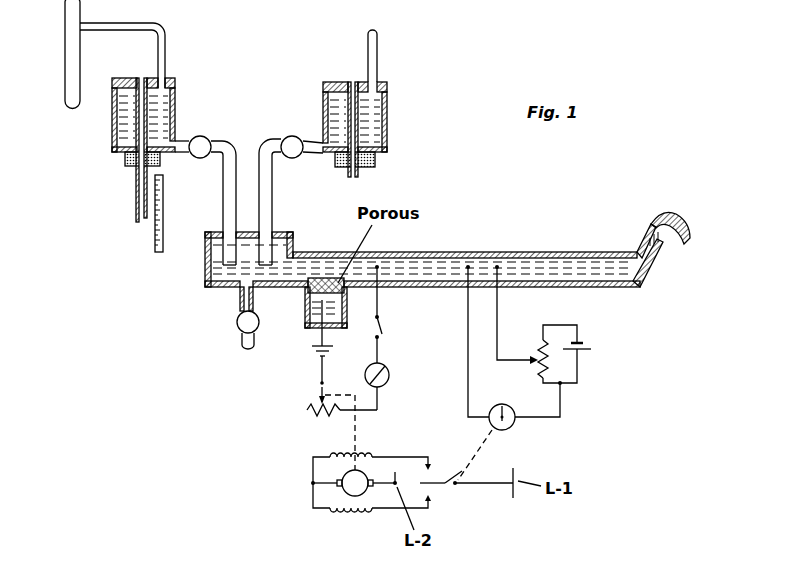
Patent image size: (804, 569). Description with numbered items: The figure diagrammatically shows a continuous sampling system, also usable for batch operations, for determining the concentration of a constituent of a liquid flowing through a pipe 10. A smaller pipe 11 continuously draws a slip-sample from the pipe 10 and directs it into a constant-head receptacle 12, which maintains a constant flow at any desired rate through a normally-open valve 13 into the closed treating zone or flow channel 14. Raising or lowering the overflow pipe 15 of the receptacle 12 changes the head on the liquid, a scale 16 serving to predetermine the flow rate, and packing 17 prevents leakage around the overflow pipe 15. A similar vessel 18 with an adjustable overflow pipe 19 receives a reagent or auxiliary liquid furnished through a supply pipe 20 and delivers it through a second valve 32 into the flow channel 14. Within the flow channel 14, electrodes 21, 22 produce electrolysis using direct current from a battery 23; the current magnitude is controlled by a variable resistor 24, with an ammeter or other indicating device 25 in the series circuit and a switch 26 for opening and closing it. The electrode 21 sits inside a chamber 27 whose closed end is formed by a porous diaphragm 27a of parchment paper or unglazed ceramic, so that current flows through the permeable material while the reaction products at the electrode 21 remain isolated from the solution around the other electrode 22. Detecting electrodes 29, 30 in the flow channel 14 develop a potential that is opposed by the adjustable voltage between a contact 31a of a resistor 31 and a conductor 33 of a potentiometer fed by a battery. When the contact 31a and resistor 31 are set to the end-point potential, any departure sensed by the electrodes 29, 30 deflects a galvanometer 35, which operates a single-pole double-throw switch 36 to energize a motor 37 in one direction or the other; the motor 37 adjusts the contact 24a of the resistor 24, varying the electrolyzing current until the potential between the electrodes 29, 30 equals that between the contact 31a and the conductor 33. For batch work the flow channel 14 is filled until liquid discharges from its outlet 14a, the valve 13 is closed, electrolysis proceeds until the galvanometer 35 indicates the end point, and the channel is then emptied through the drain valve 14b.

The pipe 10 is at (68, 57).
The smaller pipe 11 is at (167, 50).
The constant-head receptacle 12 is at (174, 100).
The normally-open valve 13 is at (208, 136).
The closed treating zone or flow channel 14 is at (600, 204).
The outlet 14a is at (682, 242).
The drain valve 14b is at (236, 323).
The overflow pipe 15 is at (134, 193).
The scale 16 is at (163, 236).
The packing 17 is at (126, 158).
The vessel 18 is at (388, 89).
The adjustable overflow pipe 19 is at (363, 125).
The supply pipe 20 is at (375, 53).
The electrode 21 is at (305, 309).
The electrode 22 is at (379, 266).
The battery 23 is at (316, 355).
The variable resistor 24 is at (316, 416).
The contact 24a is at (319, 392).
The ammeter or indicating device 25 is at (391, 376).
The switch 26 is at (385, 327).
The chamber 27 is at (306, 326).
The porous diaphragm 27a is at (326, 278).
The detecting electrode 29 is at (468, 264).
The detecting electrode 30 is at (498, 264).
The resistor 31 is at (538, 367).
The contact 31a is at (535, 358).
The valve and pipe 32 is at (291, 136).
The conductor 33 is at (559, 420).
The galvanometer 35 is at (508, 428).
The single-pole double-throw switch 36 is at (447, 487).
The motor 37 is at (352, 492).